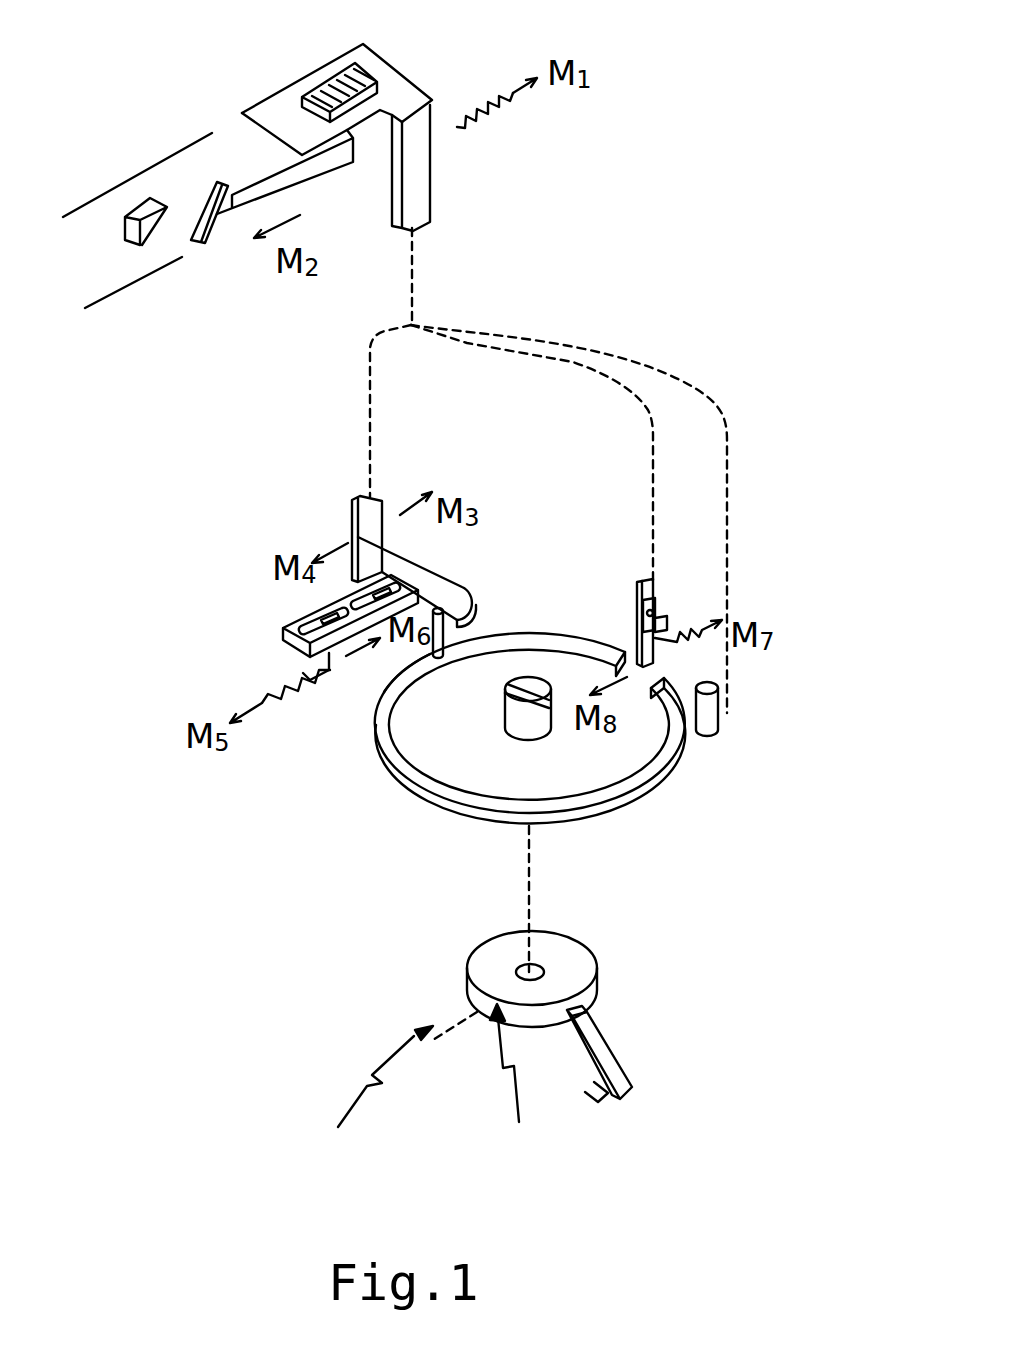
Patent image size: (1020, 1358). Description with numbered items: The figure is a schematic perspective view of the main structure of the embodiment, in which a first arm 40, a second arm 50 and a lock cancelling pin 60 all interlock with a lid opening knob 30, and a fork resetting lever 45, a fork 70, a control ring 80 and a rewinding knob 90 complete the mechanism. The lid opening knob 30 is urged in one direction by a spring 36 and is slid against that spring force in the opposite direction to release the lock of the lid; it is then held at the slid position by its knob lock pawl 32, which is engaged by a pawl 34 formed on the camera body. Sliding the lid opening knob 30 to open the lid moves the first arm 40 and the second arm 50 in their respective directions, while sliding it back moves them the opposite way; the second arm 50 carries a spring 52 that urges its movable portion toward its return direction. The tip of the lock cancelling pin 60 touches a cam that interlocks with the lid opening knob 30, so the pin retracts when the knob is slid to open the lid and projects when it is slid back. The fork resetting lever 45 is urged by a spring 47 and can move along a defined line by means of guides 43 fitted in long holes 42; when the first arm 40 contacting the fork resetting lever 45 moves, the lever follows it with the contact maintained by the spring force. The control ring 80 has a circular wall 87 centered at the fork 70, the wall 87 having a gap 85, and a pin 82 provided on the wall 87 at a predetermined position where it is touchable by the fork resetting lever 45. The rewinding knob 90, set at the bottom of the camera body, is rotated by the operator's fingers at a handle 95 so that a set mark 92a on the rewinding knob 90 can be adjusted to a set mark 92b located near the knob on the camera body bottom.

The lid opening knob 30 is at (380, 115).
The knob lock pawl 32 is at (207, 245).
The pawl 34 is at (150, 199).
The spring 36 is at (415, 152).
The first arm 40 is at (352, 516).
The long holes 42 is at (415, 566).
The guides 43 is at (310, 615).
The fork resetting lever 45 is at (271, 617).
The spring 47 is at (290, 690).
The second arm 50 is at (630, 604).
The spring 52 is at (677, 640).
The lock cancelling pin 60 is at (703, 735).
The fork 70 is at (522, 725).
The control ring 80 is at (531, 769).
The pin 82 is at (390, 690).
The gap 85 is at (674, 673).
The circular wall 87 is at (440, 802).
The rewinding knob 90 is at (583, 973).
The set mark 92a is at (517, 1084).
The set mark 92b is at (378, 1088).
The handle 95 is at (620, 1077).